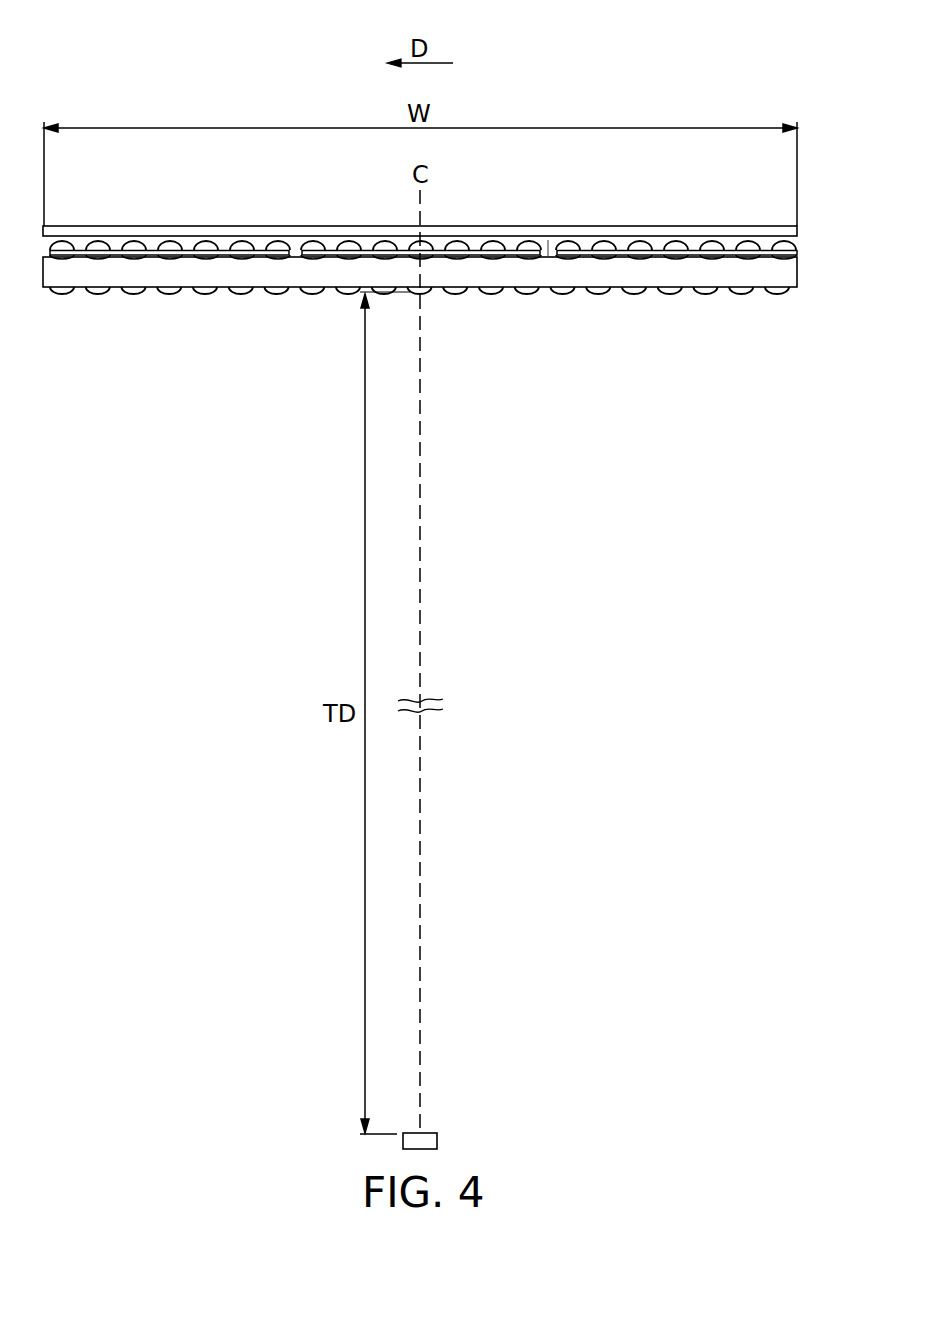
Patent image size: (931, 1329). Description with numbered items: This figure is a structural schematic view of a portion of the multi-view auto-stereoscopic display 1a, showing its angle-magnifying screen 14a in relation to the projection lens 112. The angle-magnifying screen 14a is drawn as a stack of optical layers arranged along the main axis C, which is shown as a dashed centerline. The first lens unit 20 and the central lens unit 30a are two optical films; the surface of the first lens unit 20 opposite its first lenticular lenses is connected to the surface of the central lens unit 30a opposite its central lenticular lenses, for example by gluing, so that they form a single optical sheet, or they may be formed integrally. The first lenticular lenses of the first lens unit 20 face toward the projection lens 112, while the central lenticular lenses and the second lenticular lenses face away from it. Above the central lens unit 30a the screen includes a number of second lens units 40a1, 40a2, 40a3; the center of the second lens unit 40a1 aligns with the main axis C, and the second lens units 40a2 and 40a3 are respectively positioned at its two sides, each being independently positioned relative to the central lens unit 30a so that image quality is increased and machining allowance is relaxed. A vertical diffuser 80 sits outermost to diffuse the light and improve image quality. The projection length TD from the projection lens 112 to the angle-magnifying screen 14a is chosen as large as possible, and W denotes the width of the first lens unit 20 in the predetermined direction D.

The multi-view auto-stereoscopic display 1a is at (750, 68).
The angle-magnifying screen 14a is at (92, 92).
The first lens unit 20 is at (548, 295).
The central lens unit 30a is at (547, 256).
The second lens unit 40a1 is at (365, 242).
The second lens unit 40a2 is at (150, 242).
The second lens unit 40a3 is at (657, 242).
The vertical diffuser 80 is at (293, 231).
The projection lens 112 is at (427, 1142).